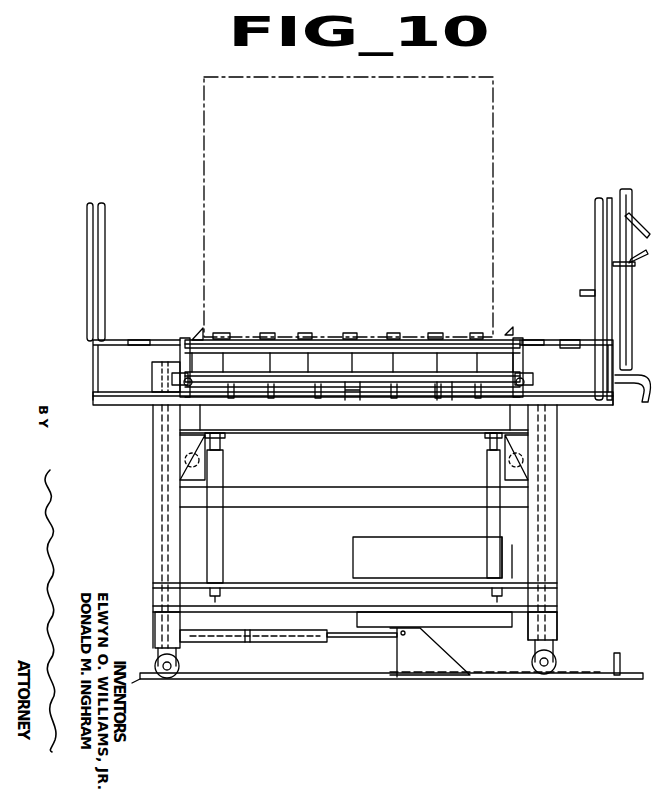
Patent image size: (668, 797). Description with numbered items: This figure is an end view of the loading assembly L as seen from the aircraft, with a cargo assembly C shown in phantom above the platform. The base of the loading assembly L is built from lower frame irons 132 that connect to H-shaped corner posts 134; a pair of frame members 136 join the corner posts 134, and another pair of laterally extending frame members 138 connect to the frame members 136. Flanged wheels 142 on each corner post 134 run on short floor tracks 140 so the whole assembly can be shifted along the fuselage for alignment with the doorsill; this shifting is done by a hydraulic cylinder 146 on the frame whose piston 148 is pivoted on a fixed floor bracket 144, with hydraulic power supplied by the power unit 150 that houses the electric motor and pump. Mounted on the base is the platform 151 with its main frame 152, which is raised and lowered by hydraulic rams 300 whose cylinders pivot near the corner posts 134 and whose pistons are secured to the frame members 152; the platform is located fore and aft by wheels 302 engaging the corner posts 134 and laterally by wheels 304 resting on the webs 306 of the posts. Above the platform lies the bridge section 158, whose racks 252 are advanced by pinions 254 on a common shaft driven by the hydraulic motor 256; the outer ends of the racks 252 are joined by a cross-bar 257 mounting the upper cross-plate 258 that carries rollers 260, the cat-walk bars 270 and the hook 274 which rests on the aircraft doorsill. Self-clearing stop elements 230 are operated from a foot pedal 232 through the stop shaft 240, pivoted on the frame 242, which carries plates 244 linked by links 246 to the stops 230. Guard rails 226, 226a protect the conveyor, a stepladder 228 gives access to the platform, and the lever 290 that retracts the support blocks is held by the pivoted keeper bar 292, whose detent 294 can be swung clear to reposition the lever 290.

The cargo assembly C is at (238, 74).
The loading assembly L is at (86, 252).
The guard rail 226a is at (100, 207).
The guard rail 226 is at (598, 205).
The lever 290 is at (624, 198).
The detent 294 is at (628, 237).
The keeper bar 292 is at (614, 263).
The foot pedal 232 is at (586, 290).
The stepladder 228 is at (640, 404).
The frame 242 is at (93, 362).
The stop shaft 240 is at (135, 392).
The bridge section 158 is at (207, 338).
The stop element 230 is at (270, 339).
The hook 274 is at (340, 348).
The cross-bar 257 is at (365, 339).
The upper cross-plate 258 is at (405, 338).
The rollers 260 is at (460, 335).
The racks 252 is at (185, 338).
The spaced bars 270 is at (135, 345).
The hydraulic motor 256 is at (570, 345).
The plates 244 is at (270, 400).
The links 246 is at (352, 400).
The pinions 254 is at (180, 392).
The corner posts 134 is at (153, 556).
The longitudinally extending frame members 136 is at (155, 502).
The webs 306 is at (153, 520).
The platform 151 is at (312, 430).
The main frame 152 is at (290, 434).
The laterally extending frame members 138 is at (320, 497).
The frame irons 132 is at (268, 595).
The power unit 150 is at (441, 569).
The hydraulic rams 300 is at (216, 517).
The wheels 302 is at (178, 460).
The wheels 304 is at (186, 470).
The hydraulic cylinder 146 is at (218, 642).
The hydraulic piston 148 is at (360, 640).
The fixed brackets 144 is at (433, 657).
The tracks 140 is at (218, 682).
The wheels 142 is at (168, 680).